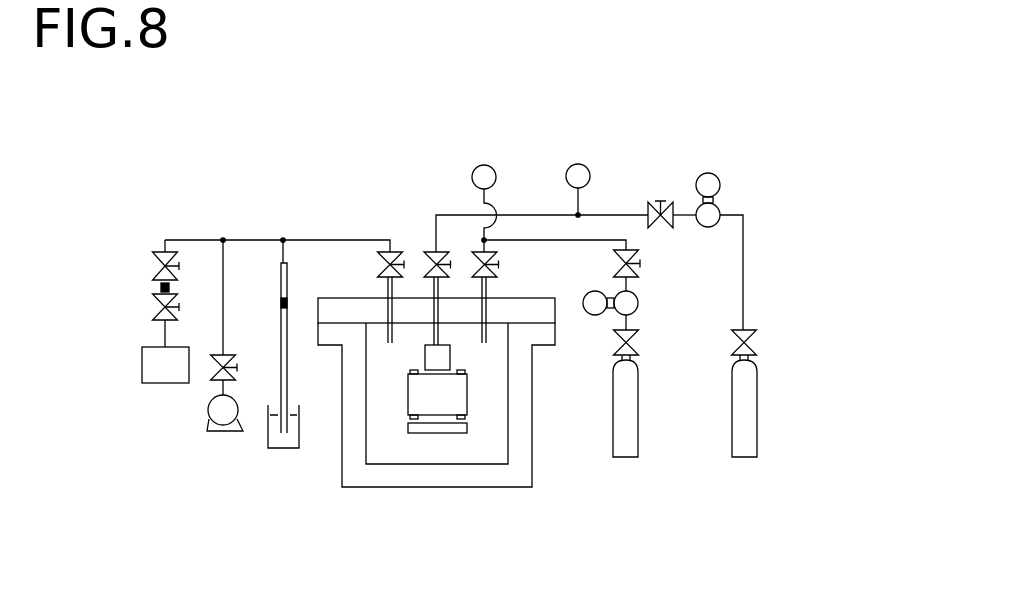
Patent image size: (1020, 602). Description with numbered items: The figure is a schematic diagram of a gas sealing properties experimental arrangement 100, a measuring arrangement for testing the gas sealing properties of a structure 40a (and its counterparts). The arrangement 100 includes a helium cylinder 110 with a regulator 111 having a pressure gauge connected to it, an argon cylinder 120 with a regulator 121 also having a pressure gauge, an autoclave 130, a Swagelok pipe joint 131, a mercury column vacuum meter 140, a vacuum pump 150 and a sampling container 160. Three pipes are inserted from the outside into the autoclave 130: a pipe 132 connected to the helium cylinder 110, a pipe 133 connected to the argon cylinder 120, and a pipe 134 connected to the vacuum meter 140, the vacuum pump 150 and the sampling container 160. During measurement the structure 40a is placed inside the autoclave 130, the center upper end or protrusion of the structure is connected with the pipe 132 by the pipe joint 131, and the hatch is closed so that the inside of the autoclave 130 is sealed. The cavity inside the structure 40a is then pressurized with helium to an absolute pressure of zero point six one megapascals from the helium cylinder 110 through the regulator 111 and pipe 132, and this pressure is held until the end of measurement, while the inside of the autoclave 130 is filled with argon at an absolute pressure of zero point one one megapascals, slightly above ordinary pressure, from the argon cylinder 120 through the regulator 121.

The gas sealing properties experimental arrangement 100 is at (450, 146).
The helium cylinder 110 is at (780, 380).
The regulator 111 is at (743, 203).
The argon cylinder 120 is at (662, 380).
The regulator 121 is at (661, 294).
The autoclave 130 is at (532, 418).
The Swagelok pipe joint 131 is at (449, 366).
The pipe 132 is at (440, 330).
The pipe 133 is at (487, 331).
The pipe 134 is at (388, 339).
The mercury column vacuum meter 140 is at (310, 381).
The vacuum pump 150 is at (209, 418).
The sampling container 160 is at (142, 371).
The structure 40a is at (443, 404).